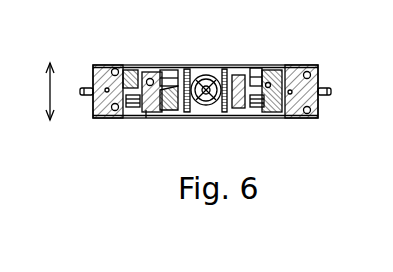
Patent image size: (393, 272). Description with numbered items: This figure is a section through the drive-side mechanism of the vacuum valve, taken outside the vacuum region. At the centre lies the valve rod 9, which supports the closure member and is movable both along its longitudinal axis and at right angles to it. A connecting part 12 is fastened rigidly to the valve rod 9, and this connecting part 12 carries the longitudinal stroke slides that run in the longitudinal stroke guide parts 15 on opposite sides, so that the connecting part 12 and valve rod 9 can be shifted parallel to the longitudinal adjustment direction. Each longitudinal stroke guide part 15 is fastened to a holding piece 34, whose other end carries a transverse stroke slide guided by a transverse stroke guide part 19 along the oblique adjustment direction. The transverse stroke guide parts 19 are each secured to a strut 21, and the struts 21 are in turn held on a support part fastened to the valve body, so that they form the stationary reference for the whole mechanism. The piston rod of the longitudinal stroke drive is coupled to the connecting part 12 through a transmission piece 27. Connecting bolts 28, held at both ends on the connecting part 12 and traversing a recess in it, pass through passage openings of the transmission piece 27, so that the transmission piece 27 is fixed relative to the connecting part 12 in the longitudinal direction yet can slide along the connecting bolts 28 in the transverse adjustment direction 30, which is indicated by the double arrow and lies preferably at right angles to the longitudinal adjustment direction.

The valve rod 9 is at (206, 118).
The connecting part 12 is at (173, 68).
The longitudinal stroke guide part 15 is at (145, 118).
The transverse stroke guide part 19 is at (112, 118).
The strut 21 is at (308, 84).
The transmission piece 27 is at (215, 68).
The connecting bolt 28 is at (184, 118).
The transverse adjustment direction 30 is at (47, 90).
The holding piece 34 is at (146, 118).